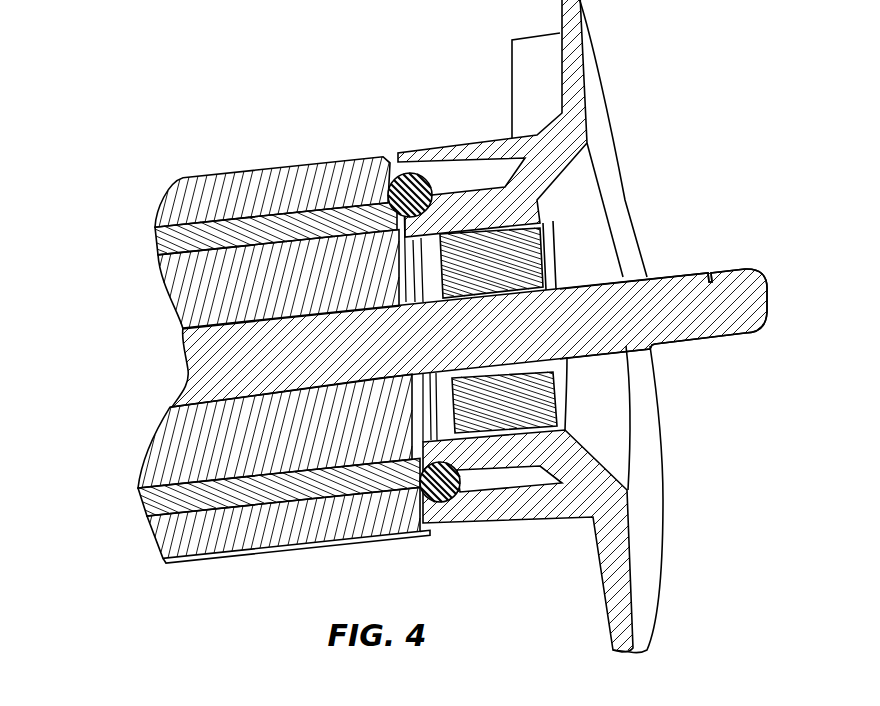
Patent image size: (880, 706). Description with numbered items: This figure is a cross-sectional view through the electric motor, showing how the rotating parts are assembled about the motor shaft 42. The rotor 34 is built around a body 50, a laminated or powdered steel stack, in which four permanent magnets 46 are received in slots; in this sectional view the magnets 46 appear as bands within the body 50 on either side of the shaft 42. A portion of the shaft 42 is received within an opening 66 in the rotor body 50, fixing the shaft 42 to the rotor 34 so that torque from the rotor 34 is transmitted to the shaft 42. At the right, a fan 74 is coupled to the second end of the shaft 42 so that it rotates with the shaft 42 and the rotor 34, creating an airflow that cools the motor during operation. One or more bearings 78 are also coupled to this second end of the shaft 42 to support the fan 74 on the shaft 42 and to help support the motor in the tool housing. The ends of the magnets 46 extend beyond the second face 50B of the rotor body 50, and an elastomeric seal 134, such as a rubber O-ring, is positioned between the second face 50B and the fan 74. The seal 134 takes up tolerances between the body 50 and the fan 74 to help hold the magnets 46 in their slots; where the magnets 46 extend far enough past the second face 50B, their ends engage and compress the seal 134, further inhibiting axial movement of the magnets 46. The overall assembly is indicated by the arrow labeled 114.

The rotor 34 is at (240, 193).
The permanent magnets 46 is at (287, 225).
The body 50 is at (208, 292).
The second face 50B is at (433, 413).
The opening 66 is at (242, 395).
The motor shaft 42 is at (716, 287).
The fan 74 is at (598, 88).
The bearings 78 is at (487, 257).
The elastomeric seal 134 is at (392, 180).
The assembly 114 is at (696, 105).